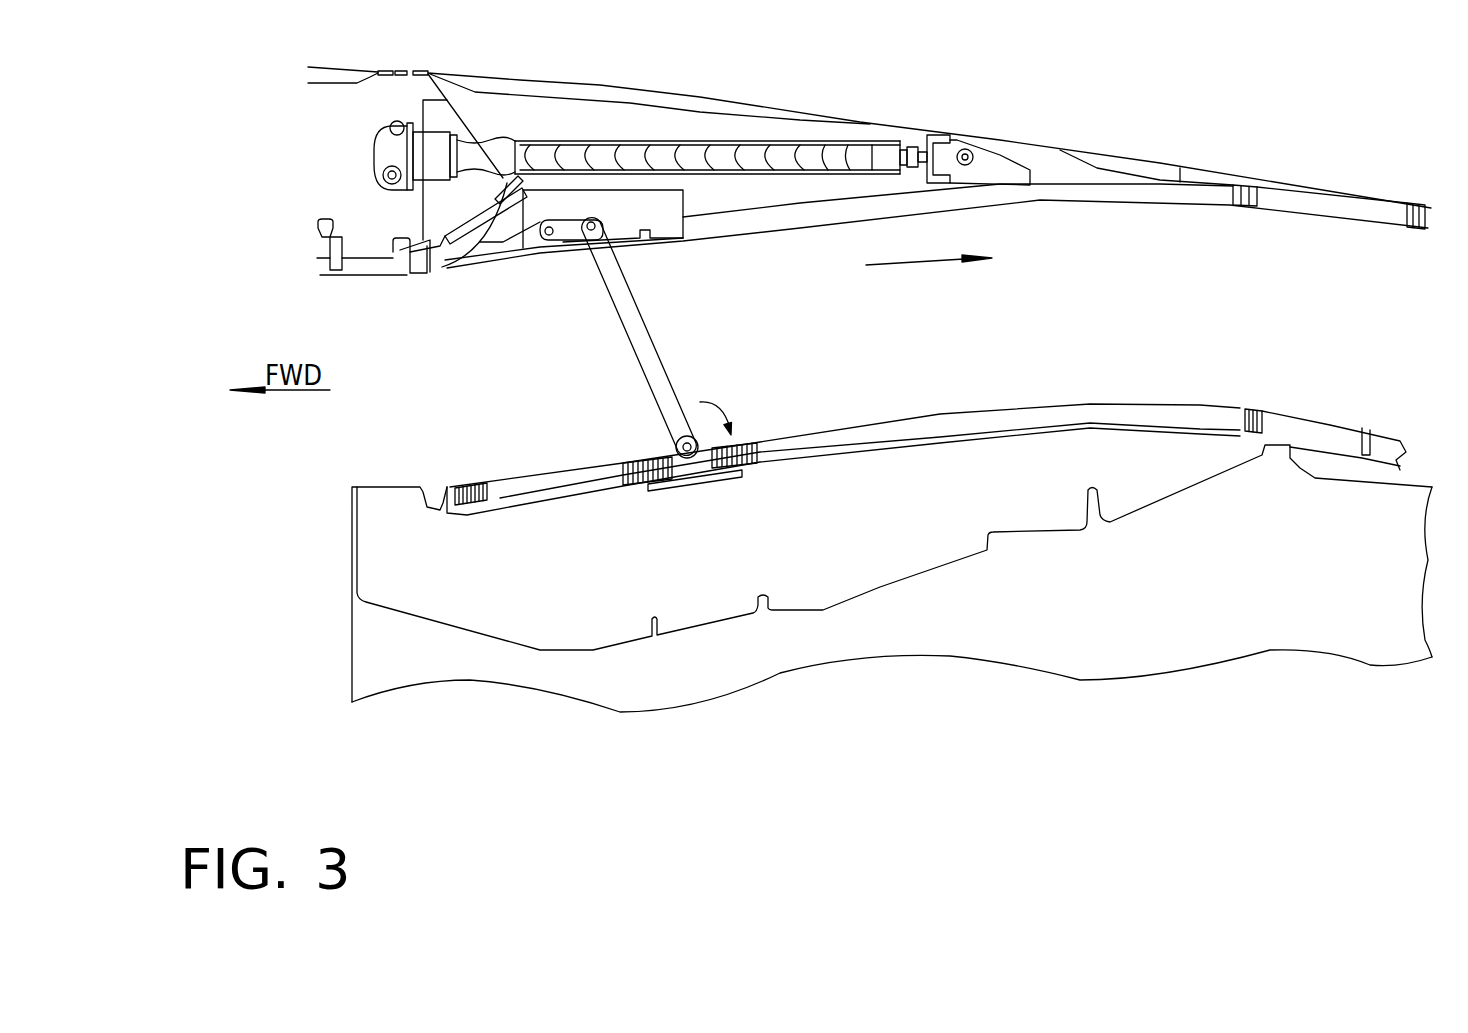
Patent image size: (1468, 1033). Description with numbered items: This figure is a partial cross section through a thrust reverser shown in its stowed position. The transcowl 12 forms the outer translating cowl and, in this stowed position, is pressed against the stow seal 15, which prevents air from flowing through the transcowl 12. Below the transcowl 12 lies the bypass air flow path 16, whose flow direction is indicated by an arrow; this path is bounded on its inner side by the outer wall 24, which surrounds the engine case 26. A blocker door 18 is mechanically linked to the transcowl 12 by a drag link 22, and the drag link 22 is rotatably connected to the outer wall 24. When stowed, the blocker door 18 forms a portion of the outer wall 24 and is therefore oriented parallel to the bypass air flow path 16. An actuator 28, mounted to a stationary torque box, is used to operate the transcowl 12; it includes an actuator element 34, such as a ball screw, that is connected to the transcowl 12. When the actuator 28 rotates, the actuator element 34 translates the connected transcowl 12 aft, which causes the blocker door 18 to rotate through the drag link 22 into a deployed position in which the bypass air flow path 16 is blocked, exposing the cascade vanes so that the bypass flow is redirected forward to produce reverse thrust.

The transcowl 12 is at (760, 100).
The stow seal 15 is at (406, 69).
The bypass air flow path 16 is at (907, 267).
The blocker door 18 is at (537, 260).
The drag link 22 is at (646, 337).
The outer wall 24 is at (924, 412).
The engine case 26 is at (570, 648).
The actuator 28 is at (375, 155).
The actuator element 34 is at (795, 154).